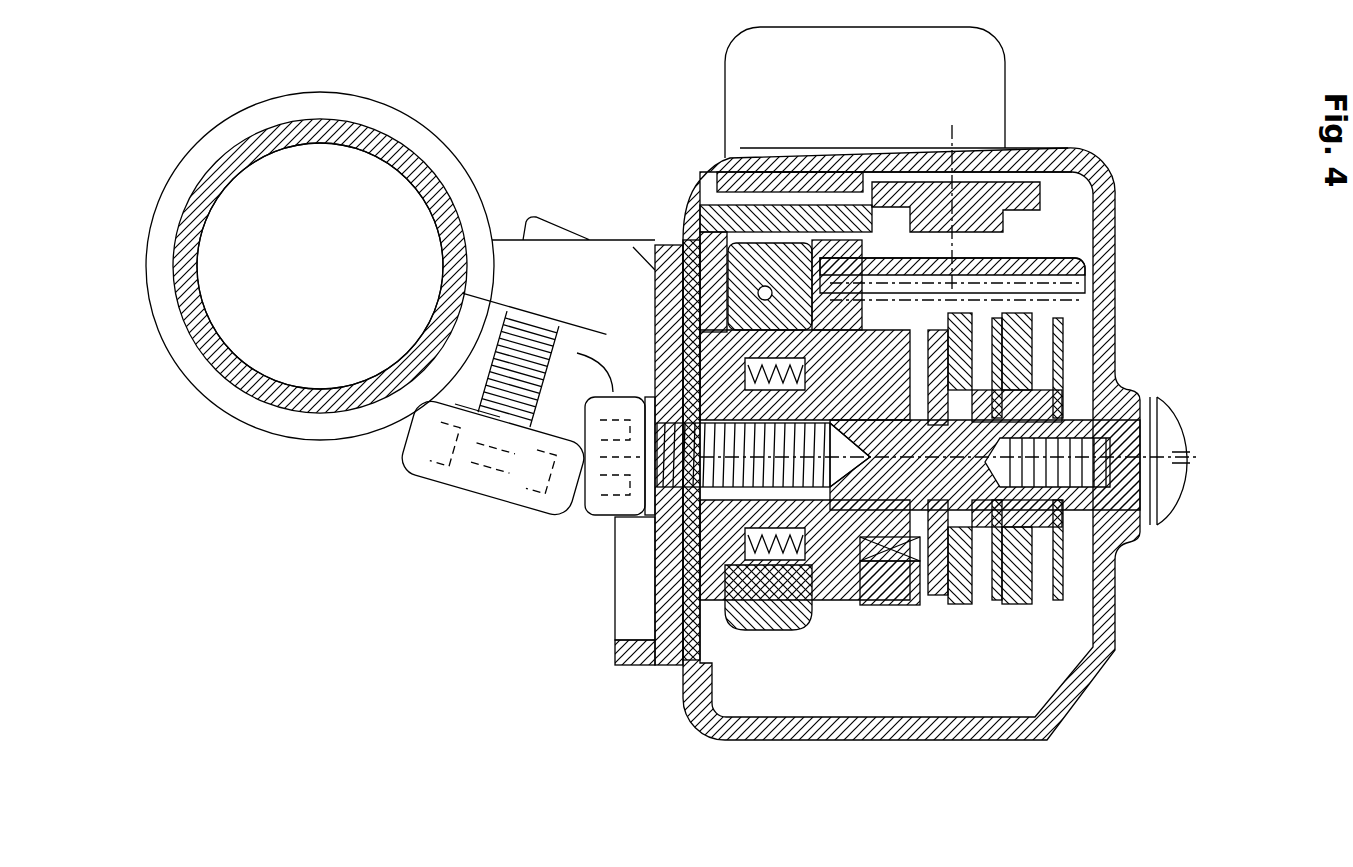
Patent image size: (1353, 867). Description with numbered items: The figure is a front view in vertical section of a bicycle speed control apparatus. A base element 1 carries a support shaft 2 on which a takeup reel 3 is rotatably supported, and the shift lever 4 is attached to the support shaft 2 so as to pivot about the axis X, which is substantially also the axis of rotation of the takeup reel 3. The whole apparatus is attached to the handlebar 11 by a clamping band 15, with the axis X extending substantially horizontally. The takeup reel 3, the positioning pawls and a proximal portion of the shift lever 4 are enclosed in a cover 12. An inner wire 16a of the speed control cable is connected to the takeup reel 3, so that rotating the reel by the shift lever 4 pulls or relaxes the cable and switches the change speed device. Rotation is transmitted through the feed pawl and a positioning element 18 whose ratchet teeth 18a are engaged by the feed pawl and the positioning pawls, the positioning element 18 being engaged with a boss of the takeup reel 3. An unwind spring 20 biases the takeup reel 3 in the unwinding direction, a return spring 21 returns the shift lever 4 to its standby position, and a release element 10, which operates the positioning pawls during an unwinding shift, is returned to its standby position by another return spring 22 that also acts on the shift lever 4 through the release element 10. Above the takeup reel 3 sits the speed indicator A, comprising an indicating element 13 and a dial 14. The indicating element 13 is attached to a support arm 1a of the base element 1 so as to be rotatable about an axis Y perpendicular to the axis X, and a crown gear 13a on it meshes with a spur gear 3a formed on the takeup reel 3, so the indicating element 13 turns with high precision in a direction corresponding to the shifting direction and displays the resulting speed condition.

The base element 1 is at (722, 640).
The support arm 1a is at (848, 210).
The support shaft 2 is at (822, 612).
The takeup reel 3 is at (740, 250).
The spur gear 3a is at (836, 615).
The shift lever 4 is at (710, 94).
The release element 10 is at (975, 592).
The handlebar 11 is at (310, 406).
The cover 12 is at (1097, 652).
The indicating element 13 is at (1025, 180).
The crown gear 13a is at (1082, 300).
The dial 14 is at (906, 150).
The clamping band 15 is at (413, 126).
The inner wire 16a is at (776, 290).
The positioning element 18 is at (882, 596).
The ratchet teeth 18a is at (906, 622).
The unwind spring 20 is at (790, 592).
The return spring 21 is at (1056, 590).
The return spring 22 is at (985, 600).
The speed indicator A is at (990, 130).
The axis X is at (963, 462).
The axis Y is at (948, 187).